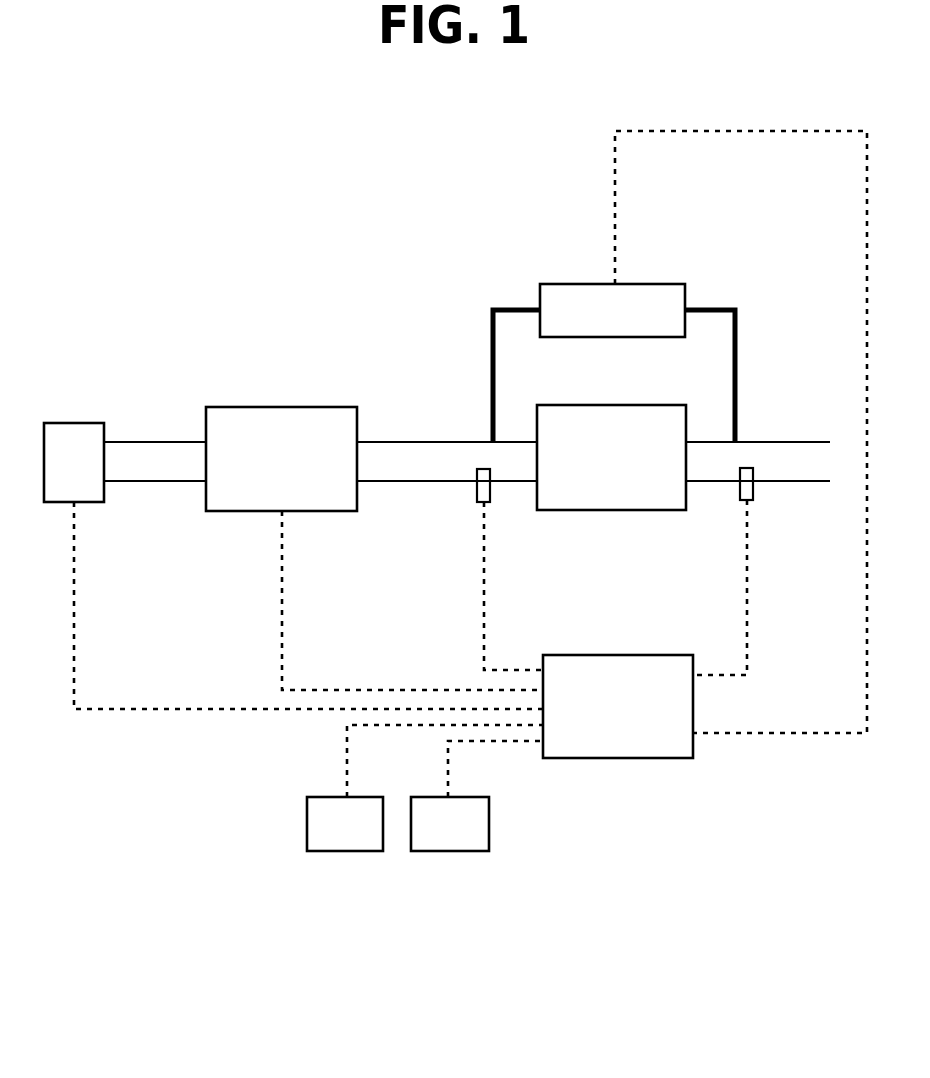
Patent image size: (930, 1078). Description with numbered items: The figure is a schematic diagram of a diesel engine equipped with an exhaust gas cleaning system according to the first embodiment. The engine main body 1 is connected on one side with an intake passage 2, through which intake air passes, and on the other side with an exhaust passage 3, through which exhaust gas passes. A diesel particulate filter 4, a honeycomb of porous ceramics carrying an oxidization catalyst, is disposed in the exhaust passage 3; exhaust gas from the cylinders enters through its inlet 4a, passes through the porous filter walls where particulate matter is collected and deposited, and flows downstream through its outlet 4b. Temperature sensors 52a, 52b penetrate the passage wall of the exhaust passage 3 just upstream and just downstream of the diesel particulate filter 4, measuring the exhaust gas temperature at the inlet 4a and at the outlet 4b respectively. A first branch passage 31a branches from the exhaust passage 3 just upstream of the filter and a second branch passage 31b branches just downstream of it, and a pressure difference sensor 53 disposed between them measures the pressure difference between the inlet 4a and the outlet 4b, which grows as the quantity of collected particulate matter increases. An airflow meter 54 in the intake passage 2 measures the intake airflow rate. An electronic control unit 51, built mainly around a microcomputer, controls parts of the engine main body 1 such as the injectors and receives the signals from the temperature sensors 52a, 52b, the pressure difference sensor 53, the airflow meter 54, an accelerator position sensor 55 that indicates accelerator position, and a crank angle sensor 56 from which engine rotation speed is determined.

The engine main body 1 is at (278, 407).
The intake passage 2 is at (153, 442).
The exhaust passage 3 is at (415, 442).
The diesel particulate filter 4 is at (617, 510).
The inlet 4a is at (537, 460).
The outlet 4b is at (686, 458).
The first branch passage 31a is at (512, 307).
The second branch passage 31b is at (710, 310).
The electronic control unit 51 is at (617, 758).
The temperature sensor 52a is at (477, 500).
The temperature sensor 52b is at (753, 495).
The pressure difference sensor 53 is at (580, 284).
The airflow meter 54 is at (74, 423).
The accelerator position sensor 55 is at (343, 851).
The crank angle sensor 56 is at (449, 851).